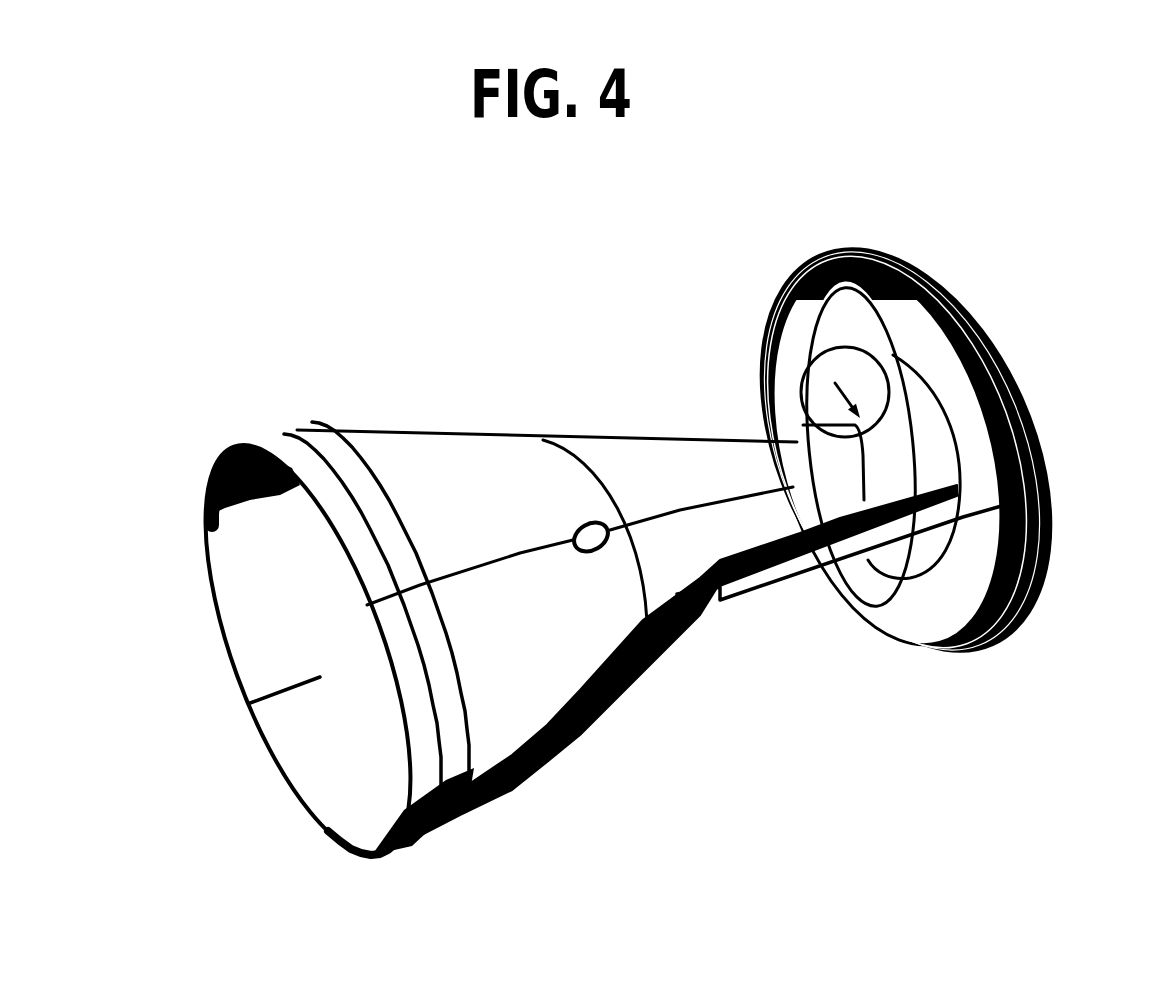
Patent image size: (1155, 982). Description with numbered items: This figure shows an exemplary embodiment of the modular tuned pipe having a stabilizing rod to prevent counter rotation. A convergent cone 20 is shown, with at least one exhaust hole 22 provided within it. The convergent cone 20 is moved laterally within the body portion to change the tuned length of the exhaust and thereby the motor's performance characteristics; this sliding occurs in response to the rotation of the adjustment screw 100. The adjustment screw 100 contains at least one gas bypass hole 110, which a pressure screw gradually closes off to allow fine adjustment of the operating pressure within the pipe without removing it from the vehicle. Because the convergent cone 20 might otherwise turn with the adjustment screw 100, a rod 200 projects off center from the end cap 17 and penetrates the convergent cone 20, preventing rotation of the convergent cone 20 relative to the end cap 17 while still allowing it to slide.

The end cap 17 is at (1008, 345).
The convergent cone 20 is at (515, 792).
The exhaust hole 22 is at (598, 512).
The adjustment screw 100 is at (816, 476).
The gas bypass hole 110 is at (829, 252).
The rod 200 is at (798, 588).